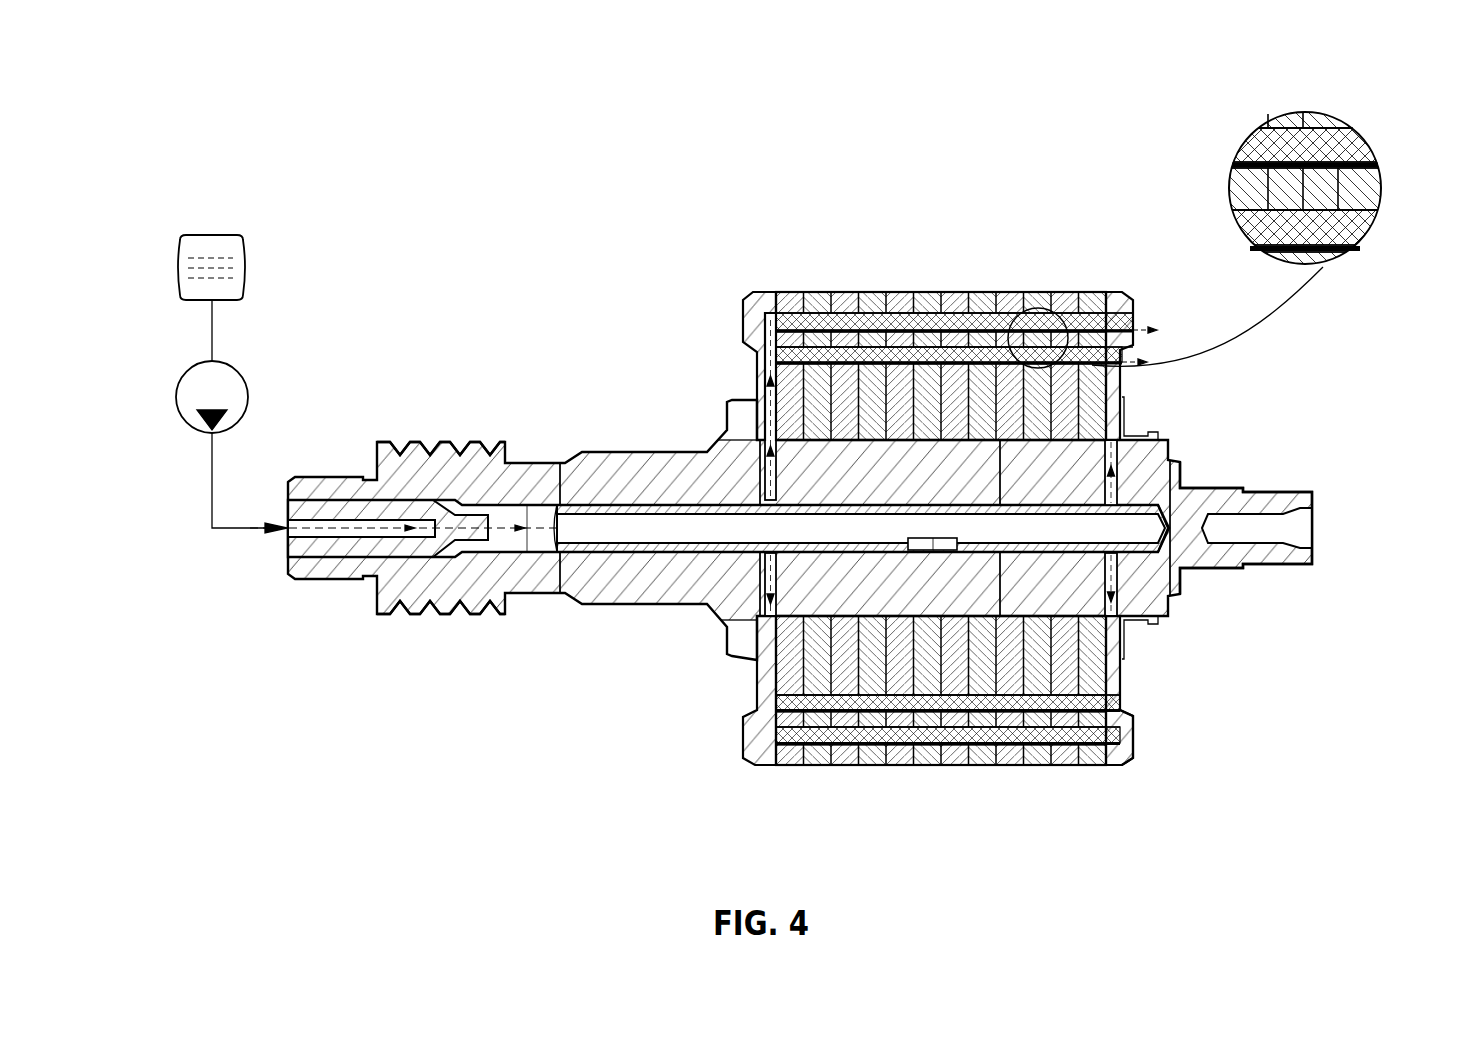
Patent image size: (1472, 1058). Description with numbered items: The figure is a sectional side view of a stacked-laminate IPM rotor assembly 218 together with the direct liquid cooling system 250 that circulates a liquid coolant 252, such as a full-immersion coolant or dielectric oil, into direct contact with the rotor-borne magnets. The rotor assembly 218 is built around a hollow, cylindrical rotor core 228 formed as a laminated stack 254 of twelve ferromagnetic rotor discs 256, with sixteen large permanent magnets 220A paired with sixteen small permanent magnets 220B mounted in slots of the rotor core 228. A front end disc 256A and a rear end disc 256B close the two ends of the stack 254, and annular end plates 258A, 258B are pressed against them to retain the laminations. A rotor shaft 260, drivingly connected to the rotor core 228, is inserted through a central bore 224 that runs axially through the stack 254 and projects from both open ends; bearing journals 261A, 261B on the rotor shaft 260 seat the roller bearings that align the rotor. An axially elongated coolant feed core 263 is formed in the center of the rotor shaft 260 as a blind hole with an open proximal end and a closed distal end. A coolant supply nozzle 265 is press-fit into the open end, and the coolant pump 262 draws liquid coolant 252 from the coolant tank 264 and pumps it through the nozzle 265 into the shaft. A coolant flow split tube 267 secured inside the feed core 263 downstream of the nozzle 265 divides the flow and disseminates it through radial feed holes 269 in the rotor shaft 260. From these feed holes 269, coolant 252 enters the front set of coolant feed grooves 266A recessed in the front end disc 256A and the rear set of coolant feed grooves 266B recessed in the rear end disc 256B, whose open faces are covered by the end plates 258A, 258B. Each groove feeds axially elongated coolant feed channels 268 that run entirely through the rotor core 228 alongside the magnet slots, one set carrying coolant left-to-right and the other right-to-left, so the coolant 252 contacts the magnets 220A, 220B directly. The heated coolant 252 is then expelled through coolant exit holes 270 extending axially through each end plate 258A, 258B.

The IPM rotor assembly 218 is at (578, 247).
The large permanent magnets 220A is at (780, 350).
The small permanent magnets 220B is at (783, 312).
The central bore 224 is at (803, 627).
The rotor core 228 is at (808, 197).
The direct liquid cooling system 250 is at (240, 172).
The liquid coolant 252 is at (188, 262).
The laminated stack 254 is at (1107, 242).
The rotor discs 256 is at (890, 766).
The front end disc 256A is at (780, 766).
The rear end disc 256B is at (1098, 766).
The front end plate 258A is at (743, 760).
The rear end plate 258B is at (1135, 760).
The rotor shaft 260 is at (654, 440).
The first rotor shaft bearing journal 261A is at (345, 473).
The second rotor shaft bearing journal 261B is at (1277, 490).
The coolant pump 262 is at (178, 372).
The coolant feed core 263 is at (507, 520).
The coolant tank 264 is at (200, 233).
The coolant supply nozzle 265 is at (316, 498).
The front set of coolant feed grooves 266A is at (767, 423).
The rear set of coolant feed grooves 266B is at (1115, 680).
The coolant flow split tube 267 is at (683, 503).
The coolant feed channels 268 is at (1010, 360).
The radial feed holes 269 is at (766, 490).
The coolant exit holes 270 is at (1112, 313).